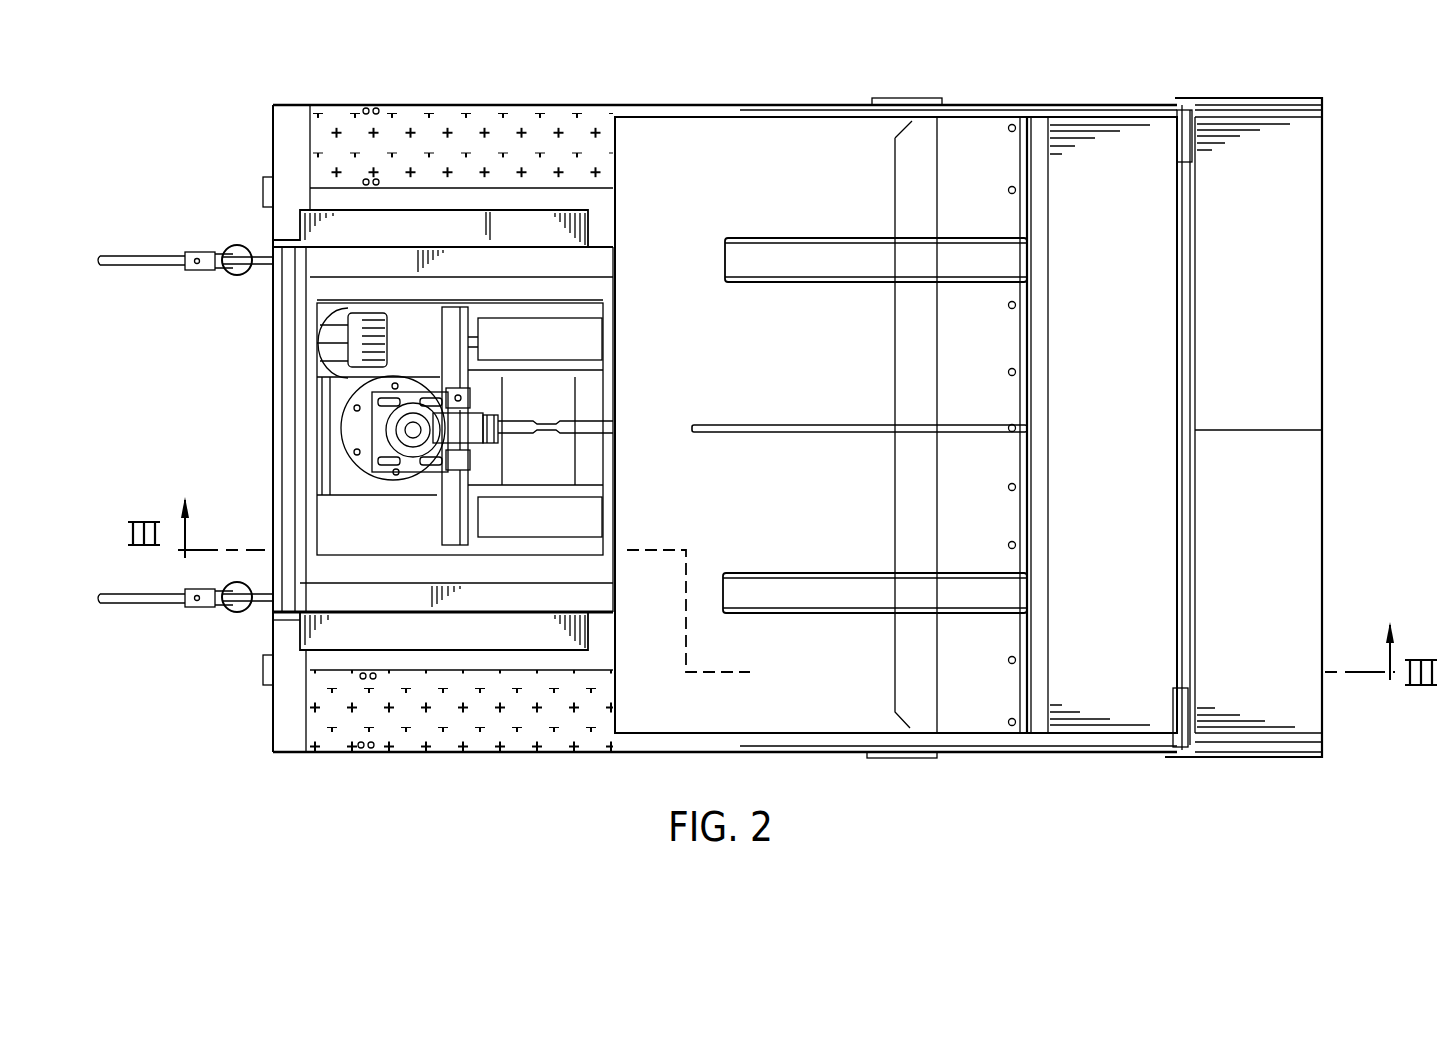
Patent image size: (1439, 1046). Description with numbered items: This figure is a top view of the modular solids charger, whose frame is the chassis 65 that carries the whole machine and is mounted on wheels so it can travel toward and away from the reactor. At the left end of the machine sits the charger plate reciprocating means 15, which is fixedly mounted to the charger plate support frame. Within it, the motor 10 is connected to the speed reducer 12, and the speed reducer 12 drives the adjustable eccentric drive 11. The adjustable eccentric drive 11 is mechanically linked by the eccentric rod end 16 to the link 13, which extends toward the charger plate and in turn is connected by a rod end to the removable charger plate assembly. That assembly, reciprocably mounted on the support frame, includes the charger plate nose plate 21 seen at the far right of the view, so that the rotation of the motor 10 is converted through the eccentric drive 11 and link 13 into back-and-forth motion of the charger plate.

The motor 10 is at (330, 345).
The adjustable eccentric drive 11 is at (357, 420).
The speed reducer 12 is at (407, 372).
The link 13 is at (600, 470).
The charger plate reciprocating means 15 is at (362, 485).
The eccentric rod end 16 is at (418, 487).
The charger plate nose plate 21 is at (1322, 403).
The chassis 65 is at (292, 753).